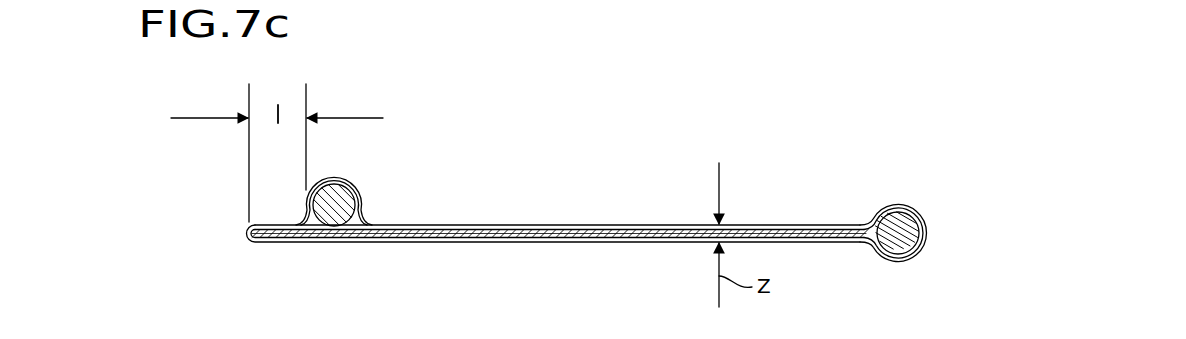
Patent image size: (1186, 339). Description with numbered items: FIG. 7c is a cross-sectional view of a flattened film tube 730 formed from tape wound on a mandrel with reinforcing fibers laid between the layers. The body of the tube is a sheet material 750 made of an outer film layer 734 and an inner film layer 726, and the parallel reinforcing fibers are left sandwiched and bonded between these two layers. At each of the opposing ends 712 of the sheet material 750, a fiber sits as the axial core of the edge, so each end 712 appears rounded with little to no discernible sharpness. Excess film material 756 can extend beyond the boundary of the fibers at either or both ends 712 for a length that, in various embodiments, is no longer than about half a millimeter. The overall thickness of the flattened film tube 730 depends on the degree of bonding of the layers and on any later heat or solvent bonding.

The opposing end 712 is at (567, 192).
The inner film layer 726 is at (467, 243).
The outer film layer 734 is at (588, 243).
The flattened film tube 730 is at (665, 147).
The sheet material 750 is at (538, 221).
The excess film material 756 is at (274, 217).